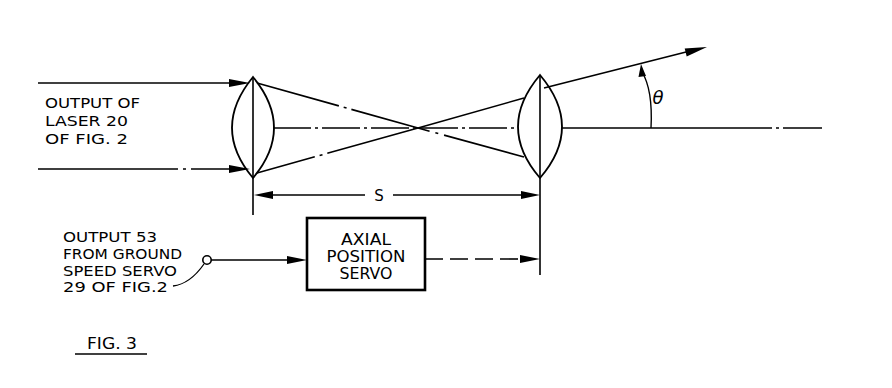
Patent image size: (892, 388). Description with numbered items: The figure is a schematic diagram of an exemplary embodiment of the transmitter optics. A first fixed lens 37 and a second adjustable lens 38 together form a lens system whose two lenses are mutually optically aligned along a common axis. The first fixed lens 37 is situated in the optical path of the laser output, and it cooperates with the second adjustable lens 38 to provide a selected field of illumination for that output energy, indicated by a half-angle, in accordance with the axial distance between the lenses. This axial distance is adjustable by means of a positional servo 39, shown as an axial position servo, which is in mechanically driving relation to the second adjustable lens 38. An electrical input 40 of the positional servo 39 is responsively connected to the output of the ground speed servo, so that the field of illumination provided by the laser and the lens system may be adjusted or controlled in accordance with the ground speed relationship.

The first fixed lens 37 is at (272, 110).
The second adjustable lens 38 is at (545, 88).
The positional servo 39 is at (487, 260).
The electrical input 40 is at (258, 262).